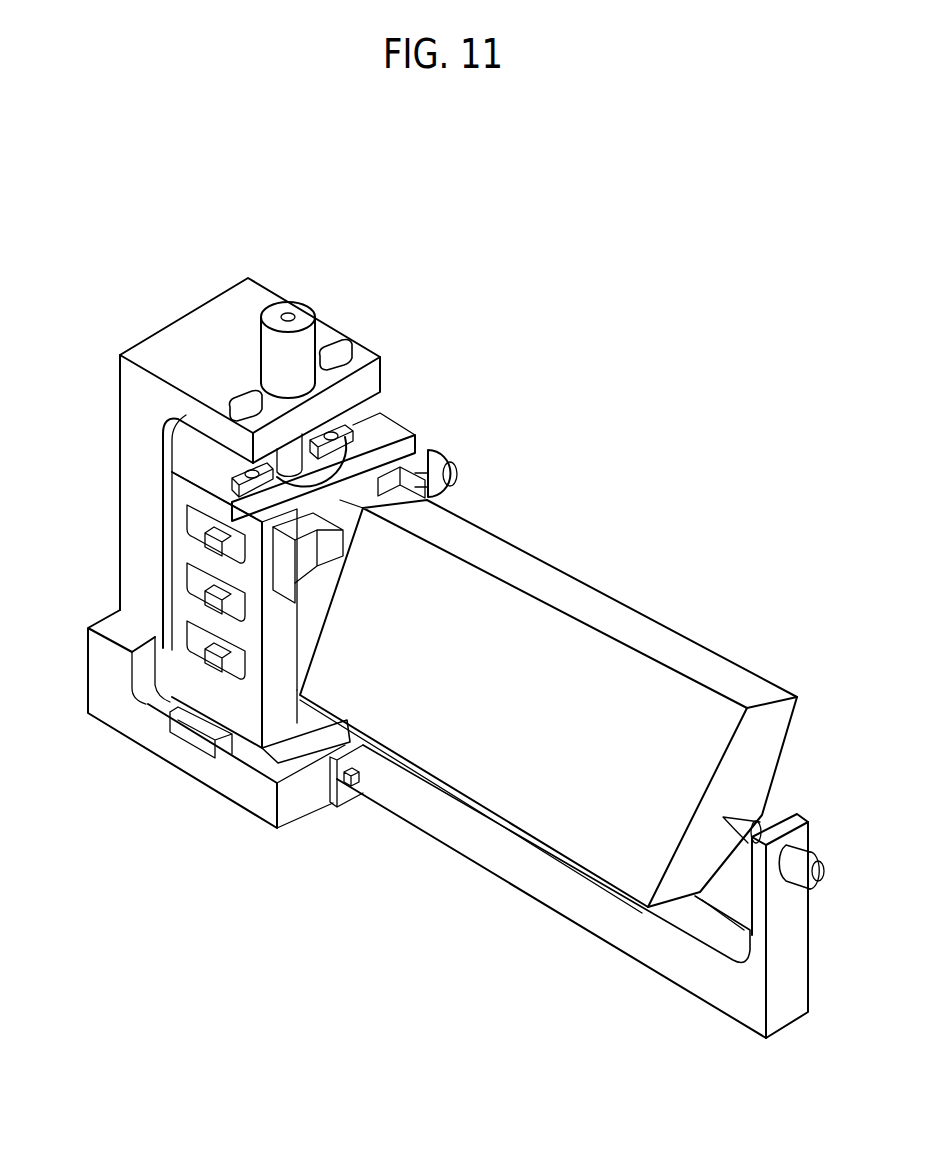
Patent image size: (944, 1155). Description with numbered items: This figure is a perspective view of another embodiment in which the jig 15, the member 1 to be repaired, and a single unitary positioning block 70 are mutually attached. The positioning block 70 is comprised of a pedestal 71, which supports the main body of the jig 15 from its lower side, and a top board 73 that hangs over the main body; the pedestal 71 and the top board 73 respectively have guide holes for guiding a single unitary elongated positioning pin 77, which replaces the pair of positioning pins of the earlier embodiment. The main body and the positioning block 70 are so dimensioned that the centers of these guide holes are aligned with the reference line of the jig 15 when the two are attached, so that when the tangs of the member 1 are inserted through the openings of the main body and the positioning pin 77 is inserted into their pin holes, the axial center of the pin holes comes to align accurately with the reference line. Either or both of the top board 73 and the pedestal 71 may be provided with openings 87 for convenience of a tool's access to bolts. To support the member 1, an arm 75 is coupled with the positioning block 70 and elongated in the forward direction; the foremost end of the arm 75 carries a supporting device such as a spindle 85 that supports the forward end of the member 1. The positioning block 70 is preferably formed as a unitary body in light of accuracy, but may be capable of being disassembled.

The positioning block 70 is at (178, 197).
The top board 73 is at (193, 342).
The openings 87 is at (334, 356).
The positioning pin 77 is at (308, 290).
The jig 15 is at (410, 400).
The member 1 is at (616, 542).
The pedestal 71 is at (222, 777).
The arm 75 is at (547, 885).
The spindle 85 is at (763, 812).